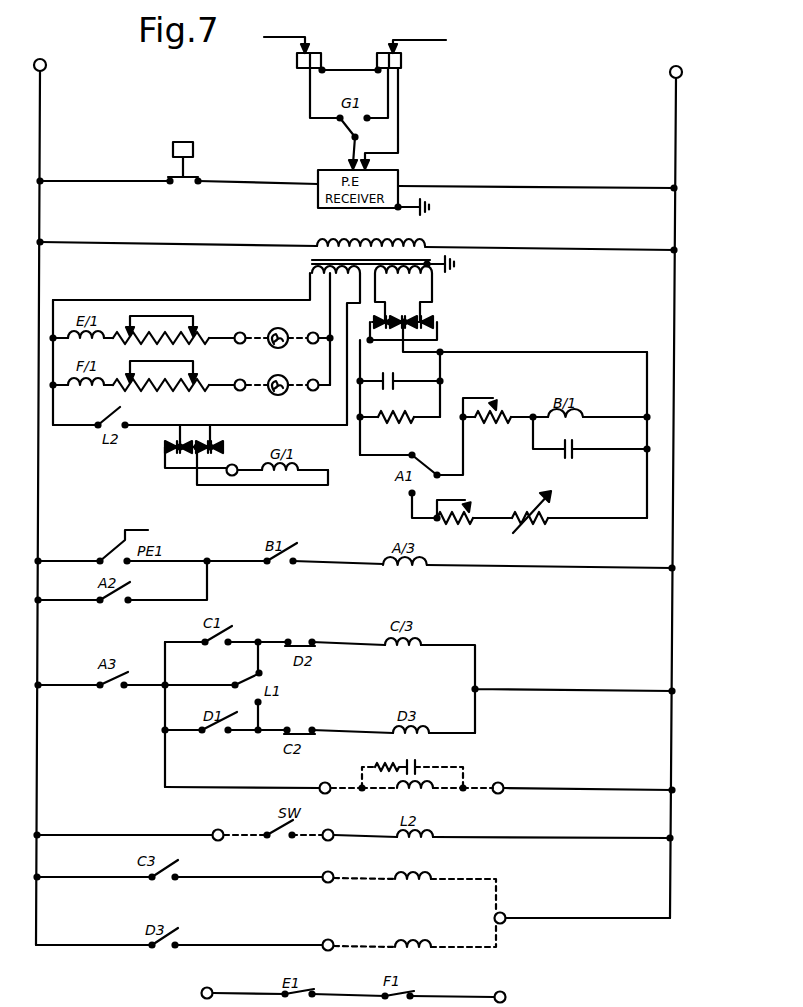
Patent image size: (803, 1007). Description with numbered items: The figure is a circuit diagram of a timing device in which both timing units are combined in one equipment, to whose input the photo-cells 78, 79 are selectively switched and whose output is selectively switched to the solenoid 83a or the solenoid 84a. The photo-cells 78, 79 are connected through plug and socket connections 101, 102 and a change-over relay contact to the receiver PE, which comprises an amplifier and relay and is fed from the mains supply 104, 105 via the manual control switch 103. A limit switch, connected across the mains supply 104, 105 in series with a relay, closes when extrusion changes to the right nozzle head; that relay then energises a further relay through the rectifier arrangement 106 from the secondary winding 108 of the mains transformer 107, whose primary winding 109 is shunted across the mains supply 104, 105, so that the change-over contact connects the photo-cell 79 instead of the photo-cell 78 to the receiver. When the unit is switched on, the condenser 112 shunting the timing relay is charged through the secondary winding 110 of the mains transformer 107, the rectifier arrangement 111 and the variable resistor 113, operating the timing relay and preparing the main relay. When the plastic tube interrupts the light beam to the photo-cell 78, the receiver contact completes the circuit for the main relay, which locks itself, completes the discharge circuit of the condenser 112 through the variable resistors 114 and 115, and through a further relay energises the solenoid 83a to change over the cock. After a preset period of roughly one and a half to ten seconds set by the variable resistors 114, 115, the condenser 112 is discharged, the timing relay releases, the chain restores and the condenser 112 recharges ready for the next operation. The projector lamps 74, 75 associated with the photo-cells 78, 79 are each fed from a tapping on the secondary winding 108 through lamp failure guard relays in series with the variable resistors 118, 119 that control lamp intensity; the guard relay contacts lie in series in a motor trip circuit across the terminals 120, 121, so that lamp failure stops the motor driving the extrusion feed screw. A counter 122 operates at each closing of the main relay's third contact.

The projector lamp 74 is at (278, 329).
The projector lamp 75 is at (278, 376).
The photo-cell 78 is at (274, 39).
The photo-cell 79 is at (429, 41).
The plug and socket connection 101 is at (304, 69).
The plug and socket connection 102 is at (400, 69).
The manual control switch 103 is at (180, 141).
The mains supply 104 is at (41, 98).
The mains supply 105 is at (675, 110).
The rectifier arrangement 106 is at (182, 450).
The mains transformer 107 is at (312, 262).
The secondary winding 108 is at (305, 271).
The primary winding 109 is at (418, 243).
The secondary winding 110 is at (423, 279).
The rectifier arrangement 111 is at (420, 325).
The condenser 112 is at (568, 458).
The variable resistor 113 is at (504, 412).
The variable resistor 114 is at (473, 509).
The variable resistor 115 is at (522, 504).
The variable resistor 118 is at (161, 330).
The variable resistor 119 is at (161, 376).
The terminal 120 is at (203, 990).
The terminal 121 is at (512, 982).
The counter 122 is at (428, 782).
The solenoid 83a is at (423, 870).
The solenoid 84a is at (427, 940).